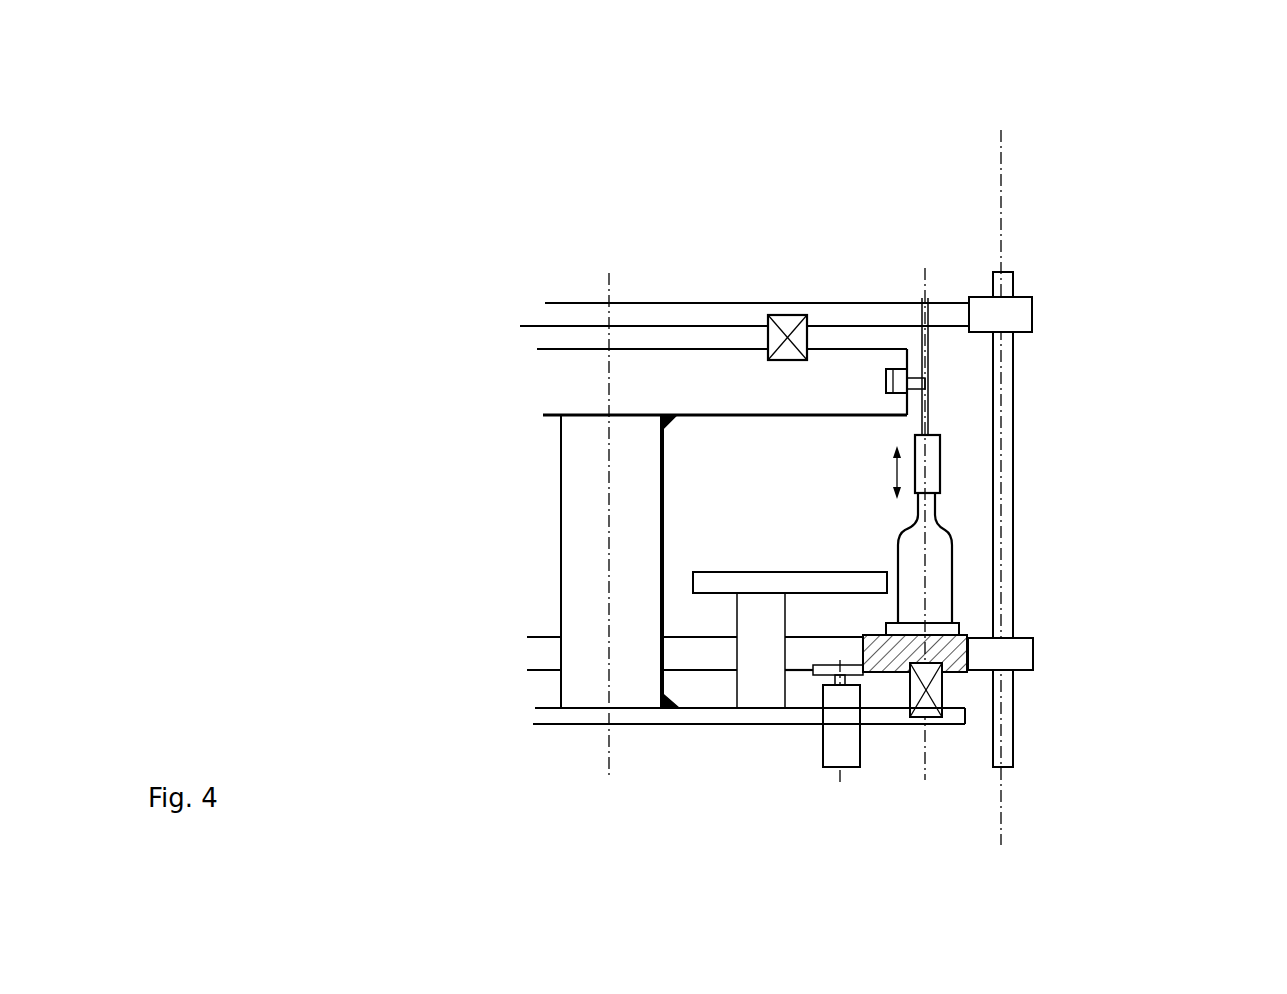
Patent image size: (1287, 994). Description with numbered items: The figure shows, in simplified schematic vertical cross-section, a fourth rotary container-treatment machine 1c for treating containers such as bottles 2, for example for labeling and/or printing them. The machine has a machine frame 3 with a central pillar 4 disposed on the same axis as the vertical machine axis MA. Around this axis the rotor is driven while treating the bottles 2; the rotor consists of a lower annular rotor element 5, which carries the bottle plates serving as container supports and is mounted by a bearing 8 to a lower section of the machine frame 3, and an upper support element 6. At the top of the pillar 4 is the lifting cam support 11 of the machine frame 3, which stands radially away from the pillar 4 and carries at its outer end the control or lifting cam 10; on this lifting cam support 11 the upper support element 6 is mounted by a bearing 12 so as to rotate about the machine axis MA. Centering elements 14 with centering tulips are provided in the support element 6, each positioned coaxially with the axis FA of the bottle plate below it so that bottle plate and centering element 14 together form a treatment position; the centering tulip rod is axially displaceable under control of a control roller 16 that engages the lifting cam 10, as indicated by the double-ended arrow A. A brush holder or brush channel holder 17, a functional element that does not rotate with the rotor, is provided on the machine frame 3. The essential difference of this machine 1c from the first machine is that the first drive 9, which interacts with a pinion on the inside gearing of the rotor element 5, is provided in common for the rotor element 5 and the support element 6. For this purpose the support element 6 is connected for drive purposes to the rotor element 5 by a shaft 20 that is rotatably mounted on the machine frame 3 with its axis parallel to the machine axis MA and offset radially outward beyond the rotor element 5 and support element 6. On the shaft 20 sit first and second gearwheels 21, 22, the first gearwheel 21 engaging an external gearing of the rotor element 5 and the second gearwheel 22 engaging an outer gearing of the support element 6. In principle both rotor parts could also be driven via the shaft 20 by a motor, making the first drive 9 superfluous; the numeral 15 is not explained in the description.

The fourth container-treatment machine 1c is at (390, 318).
The bottle 2 is at (932, 580).
The machine frame 3 is at (682, 743).
The central pillar 4 is at (572, 533).
The lower annular rotor element 5 is at (970, 672).
The upper support element 6 is at (838, 303).
The bearing 8 is at (910, 710).
The first drive 9 is at (827, 732).
The lifting cam 10 is at (895, 369).
The lifting cam support 11 is at (660, 388).
The bearing 12 is at (779, 316).
The centering element 14 is at (967, 430).
The filling position 15 is at (1047, 522).
The control roller 16 is at (861, 220).
The brush holder or brush channel holder 17 is at (785, 580).
The shaft 20 is at (1013, 602).
The first gearwheel 21 is at (1033, 652).
The second gearwheel 22 is at (1032, 308).
The double-ended arrow A is at (876, 472).
The vertical machine axis MA is at (607, 272).
The axis of bottle plate FA is at (928, 275).